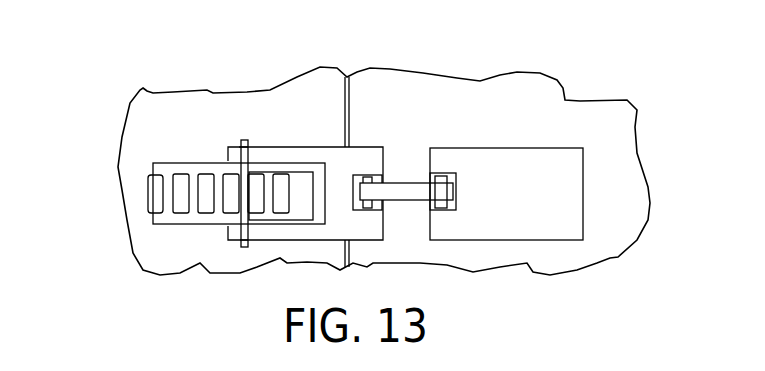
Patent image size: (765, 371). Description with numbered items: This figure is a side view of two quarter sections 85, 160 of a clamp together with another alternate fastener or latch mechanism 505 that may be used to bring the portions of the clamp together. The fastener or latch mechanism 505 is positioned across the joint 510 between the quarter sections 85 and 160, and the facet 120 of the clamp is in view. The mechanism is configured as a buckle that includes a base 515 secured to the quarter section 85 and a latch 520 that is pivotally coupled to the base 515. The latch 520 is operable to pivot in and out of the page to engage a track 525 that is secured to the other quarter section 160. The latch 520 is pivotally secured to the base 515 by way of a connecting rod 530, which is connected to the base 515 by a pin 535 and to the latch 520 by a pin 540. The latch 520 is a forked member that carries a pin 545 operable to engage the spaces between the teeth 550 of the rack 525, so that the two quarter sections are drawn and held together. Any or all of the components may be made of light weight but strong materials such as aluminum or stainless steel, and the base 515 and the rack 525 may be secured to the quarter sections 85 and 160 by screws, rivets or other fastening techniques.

The quarter section 85 is at (628, 197).
The facet 120 is at (427, 260).
The quarter section 160 is at (147, 243).
The fastener or latch mechanism 505 is at (245, 92).
The joint 510 is at (351, 91).
The base 515 is at (502, 177).
The latch 520 is at (296, 160).
The track 525 is at (193, 175).
The connecting rod 530 is at (402, 192).
The pin 535 is at (445, 175).
The pin 540 is at (370, 175).
The pin 545 is at (245, 140).
The teeth 550 is at (148, 188).